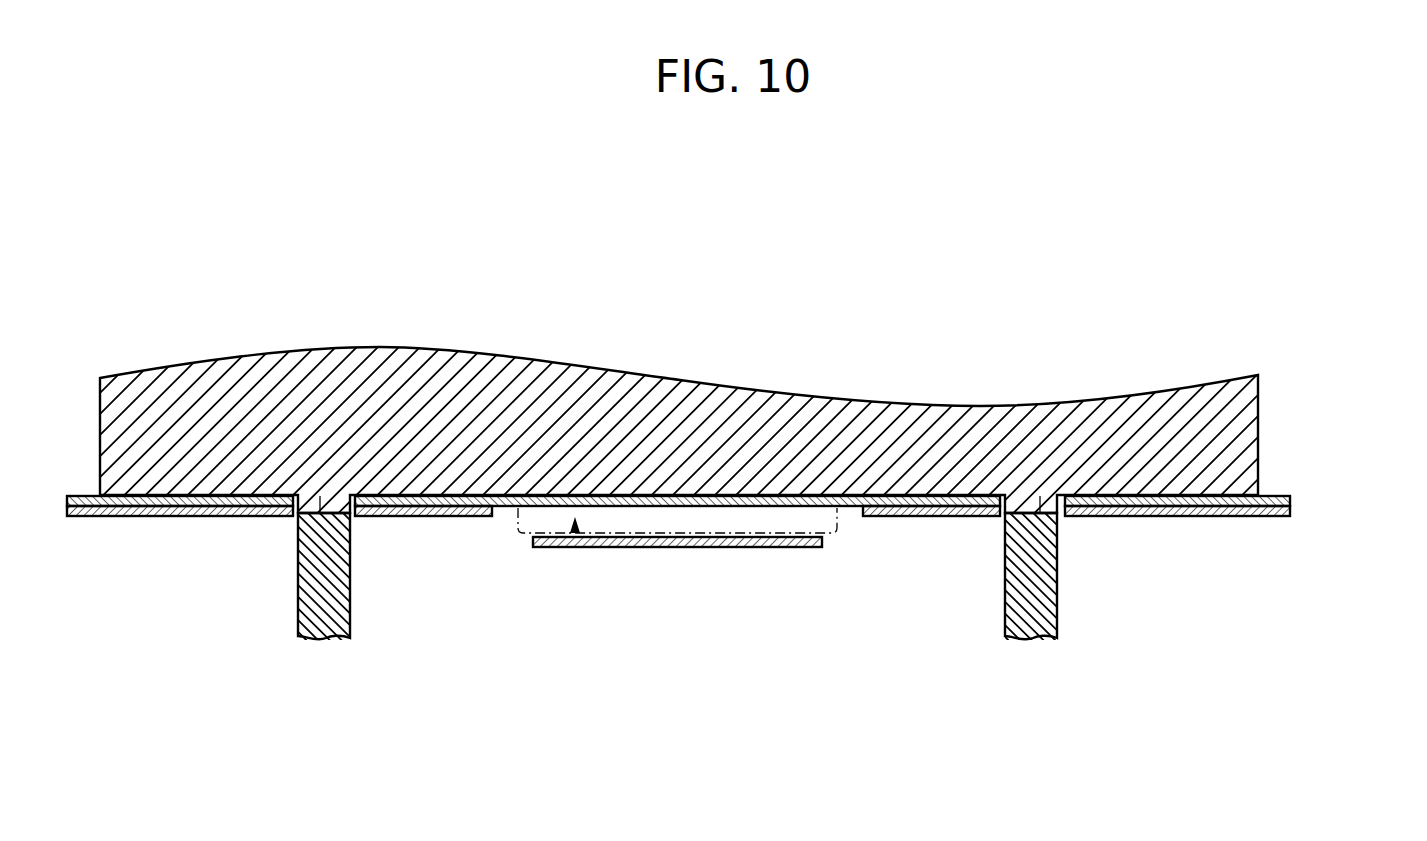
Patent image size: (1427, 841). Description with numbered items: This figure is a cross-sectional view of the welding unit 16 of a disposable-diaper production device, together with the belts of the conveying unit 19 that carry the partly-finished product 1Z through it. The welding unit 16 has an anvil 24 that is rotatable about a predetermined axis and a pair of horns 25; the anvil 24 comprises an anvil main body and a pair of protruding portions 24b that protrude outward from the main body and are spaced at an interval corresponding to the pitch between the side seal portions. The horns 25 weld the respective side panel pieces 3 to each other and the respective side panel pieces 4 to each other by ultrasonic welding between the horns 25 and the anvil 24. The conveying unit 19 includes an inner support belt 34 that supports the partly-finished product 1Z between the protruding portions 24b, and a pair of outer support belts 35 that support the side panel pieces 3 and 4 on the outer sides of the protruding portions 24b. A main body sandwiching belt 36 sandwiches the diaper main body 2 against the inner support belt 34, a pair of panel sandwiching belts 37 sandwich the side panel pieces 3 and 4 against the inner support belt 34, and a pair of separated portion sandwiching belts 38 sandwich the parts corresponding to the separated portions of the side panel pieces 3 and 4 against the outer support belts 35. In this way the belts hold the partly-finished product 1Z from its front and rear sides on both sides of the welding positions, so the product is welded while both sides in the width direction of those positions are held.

The welding unit 16 is at (997, 254).
The anvil 24 is at (1130, 420).
The protruding portions 24b is at (300, 527).
The horns 25 is at (322, 643).
The inner support belt 34 is at (706, 498).
The outer support belts 35 is at (92, 496).
The main body sandwiching belt 36 is at (673, 548).
The panel sandwiching belts 37 is at (422, 518).
The separated portion sandwiching belts 38 is at (146, 518).
The side panel piece 3 is at (505, 520).
The side panel piece 4 is at (848, 520).
The diaper main body 2 is at (740, 522).
The partly-finished product 1Z is at (573, 548).
The conveying unit 19 is at (1312, 501).